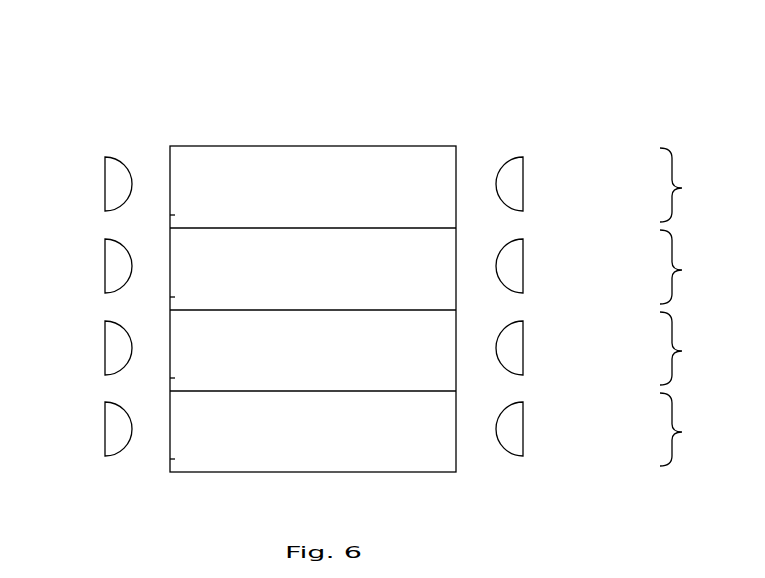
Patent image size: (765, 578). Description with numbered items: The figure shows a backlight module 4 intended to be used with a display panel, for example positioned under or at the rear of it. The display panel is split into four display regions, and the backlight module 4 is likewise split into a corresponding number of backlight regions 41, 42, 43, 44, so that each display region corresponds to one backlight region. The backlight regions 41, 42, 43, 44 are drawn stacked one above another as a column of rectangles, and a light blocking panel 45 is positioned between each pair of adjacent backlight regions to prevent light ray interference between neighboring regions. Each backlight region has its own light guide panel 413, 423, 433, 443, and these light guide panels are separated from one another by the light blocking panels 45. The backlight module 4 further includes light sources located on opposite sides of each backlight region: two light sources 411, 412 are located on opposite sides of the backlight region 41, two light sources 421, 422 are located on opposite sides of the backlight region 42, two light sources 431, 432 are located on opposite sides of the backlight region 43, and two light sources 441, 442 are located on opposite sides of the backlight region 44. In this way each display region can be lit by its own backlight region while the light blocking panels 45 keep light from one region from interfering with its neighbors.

The backlight module 4 is at (466, 100).
The backlight region 41 is at (682, 188).
The backlight region 42 is at (682, 270).
The backlight region 43 is at (682, 351).
The backlight region 44 is at (682, 432).
The light blocking panel 45 is at (440, 227).
The light source 411 is at (523, 181).
The light source 412 is at (105, 185).
The light guide panel 413 is at (170, 215).
The light source 421 is at (523, 263).
The light source 422 is at (105, 267).
The light guide panel 423 is at (170, 297).
The light source 431 is at (523, 345).
The light source 432 is at (105, 349).
The light guide panel 433 is at (170, 378).
The light source 441 is at (523, 426).
The light source 442 is at (105, 430).
The light guide panel 443 is at (170, 459).